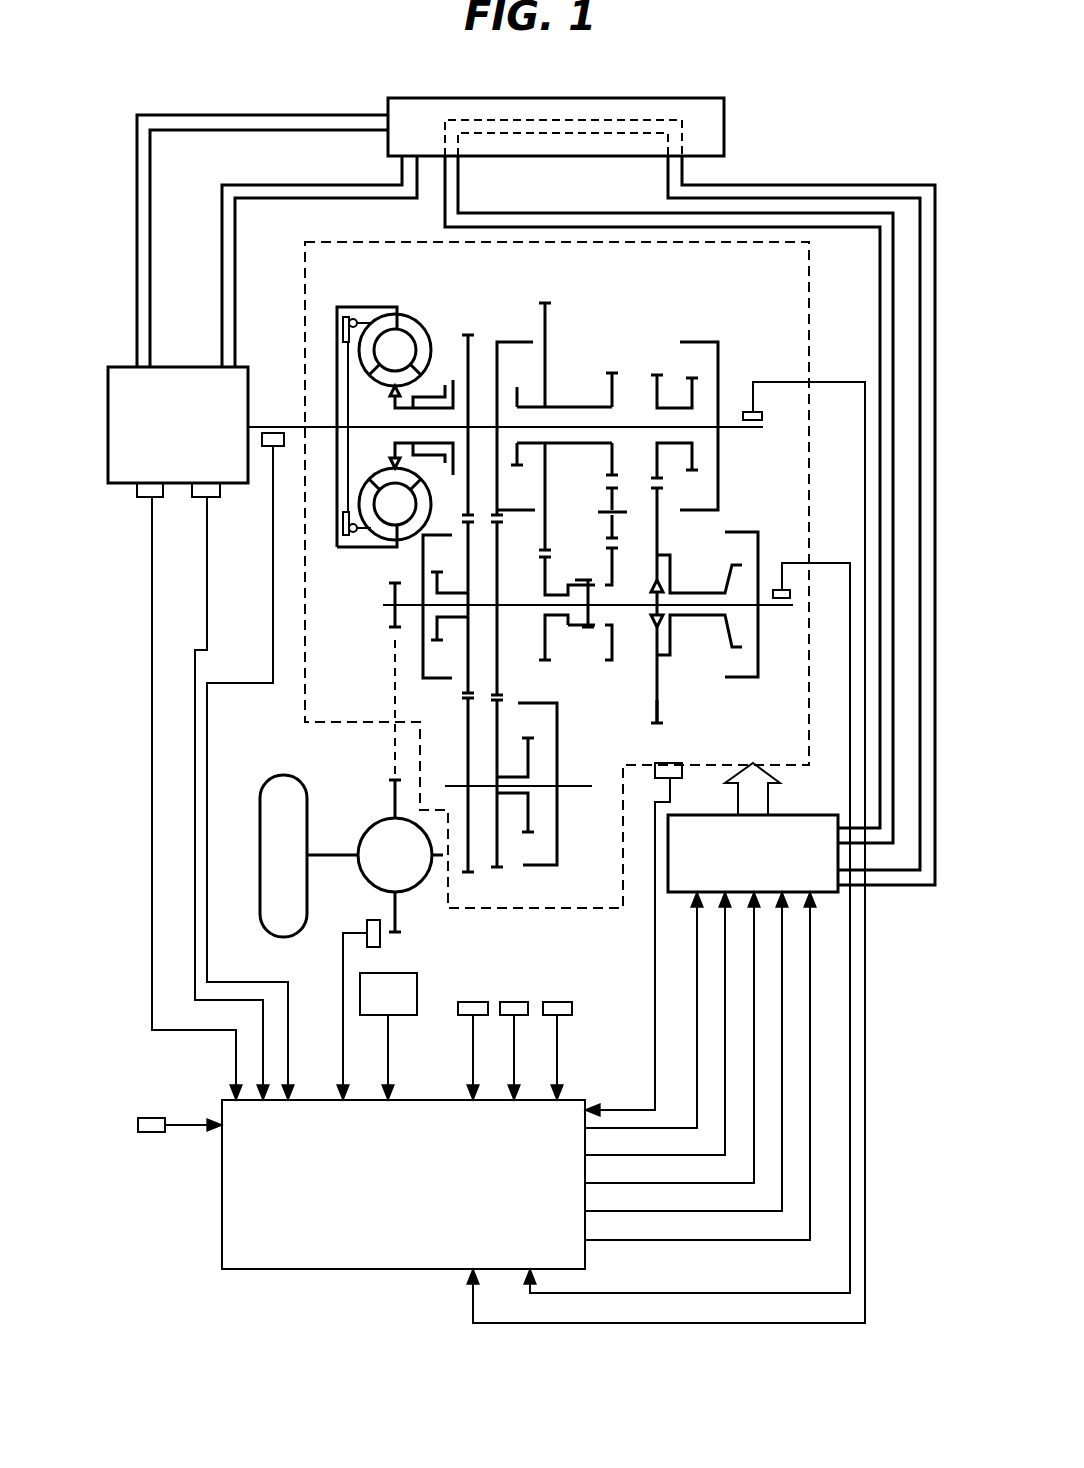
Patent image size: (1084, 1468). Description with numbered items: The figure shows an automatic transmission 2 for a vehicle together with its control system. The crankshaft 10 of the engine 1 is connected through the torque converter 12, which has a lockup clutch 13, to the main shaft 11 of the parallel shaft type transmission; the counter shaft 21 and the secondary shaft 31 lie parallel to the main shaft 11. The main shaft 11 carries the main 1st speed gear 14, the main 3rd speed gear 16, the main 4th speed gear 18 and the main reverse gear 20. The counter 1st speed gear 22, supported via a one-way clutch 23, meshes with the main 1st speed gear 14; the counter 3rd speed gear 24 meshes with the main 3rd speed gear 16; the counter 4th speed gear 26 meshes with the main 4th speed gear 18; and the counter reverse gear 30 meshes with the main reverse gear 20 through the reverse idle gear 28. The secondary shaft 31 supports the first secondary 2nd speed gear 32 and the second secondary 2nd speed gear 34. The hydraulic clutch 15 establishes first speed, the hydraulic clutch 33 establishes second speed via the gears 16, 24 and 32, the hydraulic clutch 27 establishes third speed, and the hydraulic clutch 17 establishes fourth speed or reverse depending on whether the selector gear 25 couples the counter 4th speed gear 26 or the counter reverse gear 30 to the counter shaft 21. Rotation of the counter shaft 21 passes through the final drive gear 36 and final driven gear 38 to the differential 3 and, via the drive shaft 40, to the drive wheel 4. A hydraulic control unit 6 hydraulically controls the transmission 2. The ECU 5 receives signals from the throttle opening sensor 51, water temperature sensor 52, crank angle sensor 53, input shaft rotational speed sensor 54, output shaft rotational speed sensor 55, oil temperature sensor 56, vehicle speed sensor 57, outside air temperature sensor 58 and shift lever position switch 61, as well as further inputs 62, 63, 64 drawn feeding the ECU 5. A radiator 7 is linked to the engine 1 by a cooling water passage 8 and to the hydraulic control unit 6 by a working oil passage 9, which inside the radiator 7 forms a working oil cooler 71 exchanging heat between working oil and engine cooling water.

The engine 1 is at (178, 385).
The automatic transmission 2 is at (549, 559).
The differential 3 is at (396, 847).
The drive wheel 4 is at (283, 823).
The ECU (Electronic Control Unit) 5 is at (425, 1168).
The hydraulic control unit 6 is at (711, 1001).
The radiator 7 is at (595, 127).
The cooling water passage 8 is at (277, 241).
The working oil passage 9 is at (690, 513).
The crankshaft 10 is at (474, 385).
The main shaft 11 is at (734, 455).
The torque converter 12 is at (399, 396).
The lockup clutch 13 is at (350, 391).
The main 1st speed gear 14 is at (669, 385).
The hydraulic clutch for the 1st shift position 15 is at (699, 390).
The main 3rd speed gear 16 is at (466, 489).
The hydraulic clutch for the 4th shift position and the reverse shift position 17 is at (512, 479).
The main 4th speed gear 18 is at (564, 356).
The main reverse gear 20 is at (614, 360).
The counter shaft 21 is at (730, 604).
The counter 1st speed gear 22 is at (687, 730).
The one-way clutch 23 is at (674, 605).
The counter 3rd speed gear 24 is at (434, 719).
The selector gear 25 is at (567, 535).
The counter 4th speed gear 26 is at (570, 655).
The hydraulic clutch for the 3rd shift position 27 is at (407, 606).
The reverse idle gear 28 is at (588, 514).
The counter reverse gear 30 is at (616, 672).
The secondary shaft 31 is at (524, 817).
The first secondary 2nd speed gear 32 is at (495, 833).
The hydraulic clutch for the 2nd shift position 33 is at (574, 784).
The second secondary 2nd speed gear 34 is at (540, 798).
The final drive gear 36 is at (559, 615).
The final driven gear 38 is at (375, 729).
The drive shaft 40 is at (332, 824).
The throttle opening sensor 51 is at (189, 791).
The water temperature sensor 52 is at (230, 791).
The crank angle sensor 53 is at (250, 766).
The input shaft rotational speed sensor 54 is at (666, 829).
The output shaft rotational speed sensor 55 is at (687, 901).
The oil temperature sensor 56 is at (659, 939).
The vehicle speed sensor 57 is at (348, 993).
The outside air temperature sensor 58 is at (180, 1094).
The shift lever position switch 61 is at (400, 1020).
The sensor 62 is at (472, 1018).
The sensor 63 is at (512, 1018).
The sensor 64 is at (556, 1018).
The working oil cooler 71 is at (563, 162).